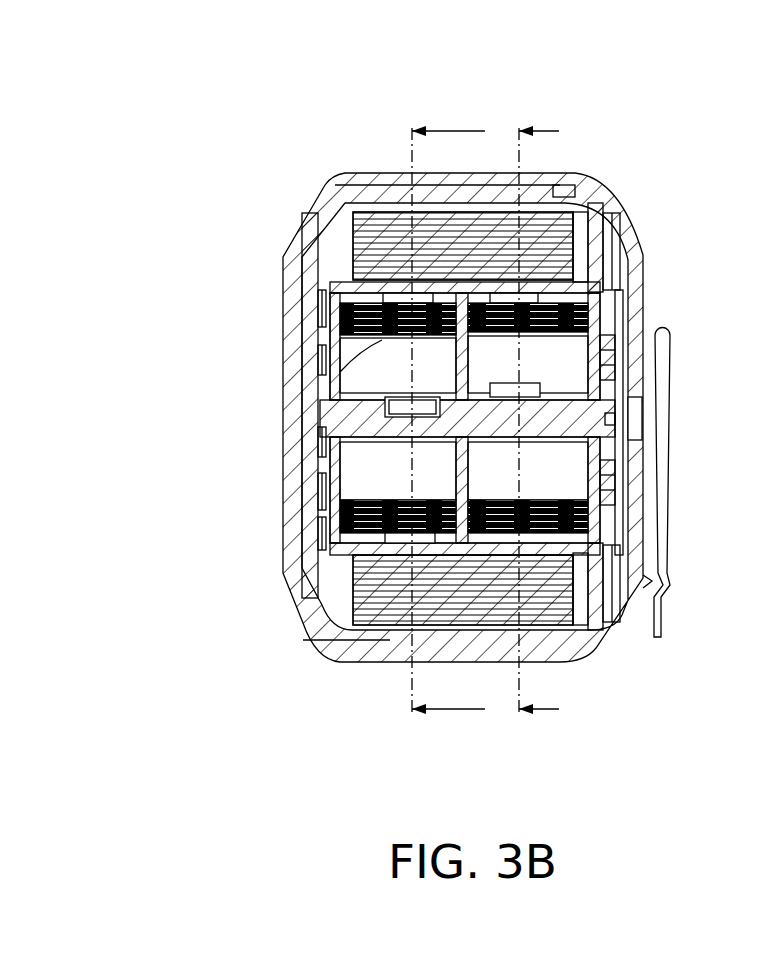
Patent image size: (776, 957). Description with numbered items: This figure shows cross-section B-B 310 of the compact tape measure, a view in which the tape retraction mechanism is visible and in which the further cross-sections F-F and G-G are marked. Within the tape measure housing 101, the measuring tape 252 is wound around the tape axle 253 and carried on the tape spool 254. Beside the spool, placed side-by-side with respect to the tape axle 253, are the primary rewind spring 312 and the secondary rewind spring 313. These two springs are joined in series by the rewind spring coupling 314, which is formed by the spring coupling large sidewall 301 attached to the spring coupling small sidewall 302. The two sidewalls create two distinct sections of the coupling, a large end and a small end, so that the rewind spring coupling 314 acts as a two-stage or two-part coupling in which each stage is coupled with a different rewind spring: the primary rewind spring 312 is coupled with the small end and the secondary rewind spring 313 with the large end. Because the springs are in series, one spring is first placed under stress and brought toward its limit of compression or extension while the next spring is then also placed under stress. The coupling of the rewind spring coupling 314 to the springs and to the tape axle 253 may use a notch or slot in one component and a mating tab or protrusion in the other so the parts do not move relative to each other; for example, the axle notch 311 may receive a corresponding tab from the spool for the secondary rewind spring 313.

The cross-section B-B 310 is at (242, 122).
The tape measure housing 101 is at (283, 326).
The measuring tape 252 is at (557, 228).
The tape axle 253 is at (345, 418).
The tape spool 254 is at (330, 272).
The spring coupling large sidewall 301 is at (313, 543).
The spring coupling small sidewall 302 is at (560, 432).
The axle notch 311 is at (405, 398).
The primary rewind spring 312 is at (603, 356).
The secondary rewind spring 313 is at (318, 364).
The rewind spring coupling 314 is at (470, 480).